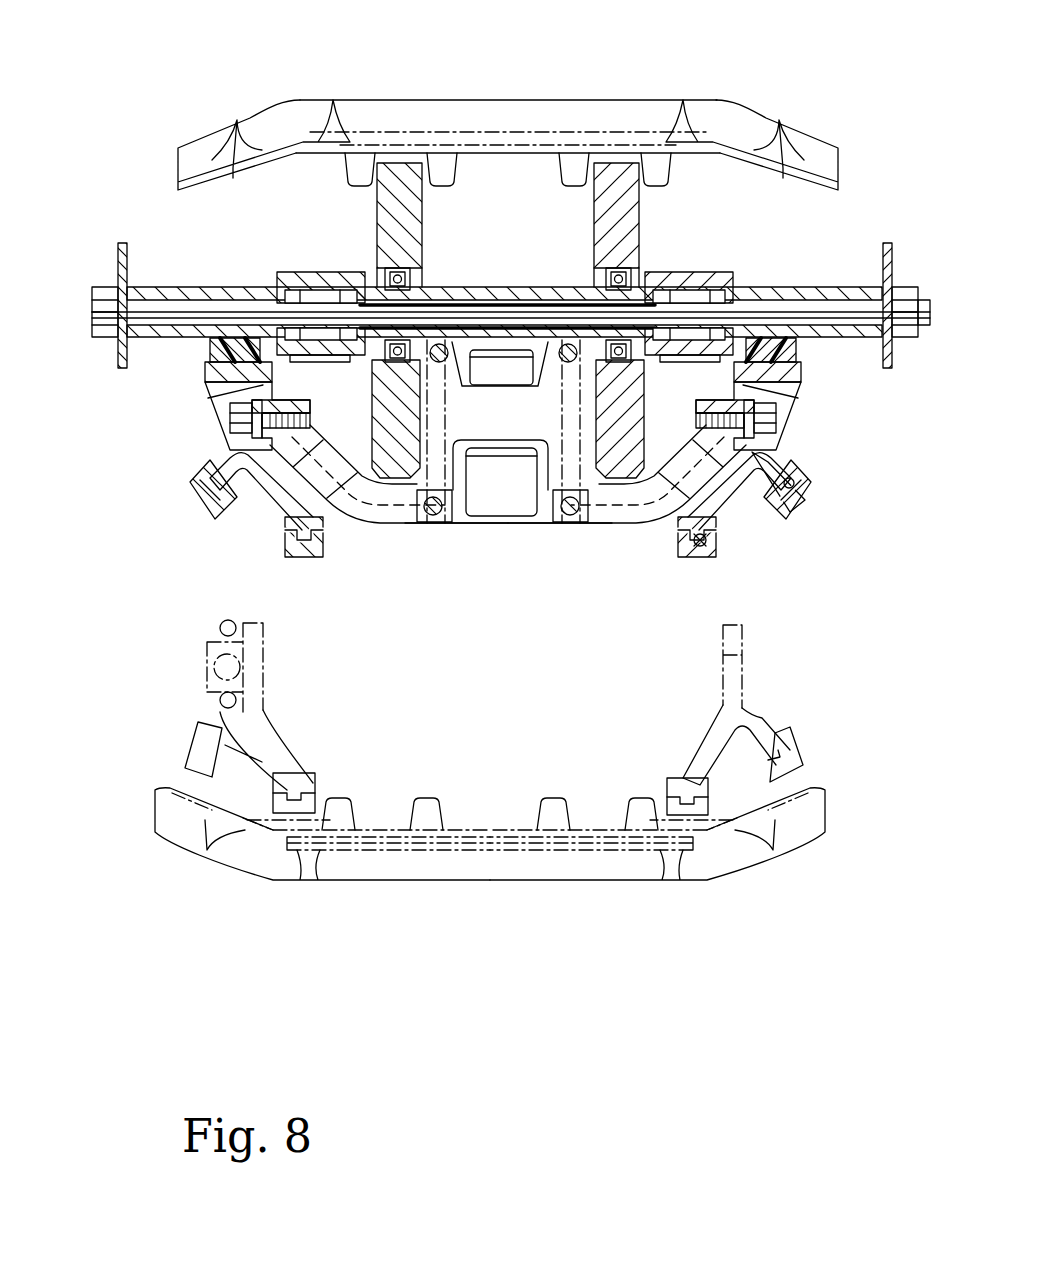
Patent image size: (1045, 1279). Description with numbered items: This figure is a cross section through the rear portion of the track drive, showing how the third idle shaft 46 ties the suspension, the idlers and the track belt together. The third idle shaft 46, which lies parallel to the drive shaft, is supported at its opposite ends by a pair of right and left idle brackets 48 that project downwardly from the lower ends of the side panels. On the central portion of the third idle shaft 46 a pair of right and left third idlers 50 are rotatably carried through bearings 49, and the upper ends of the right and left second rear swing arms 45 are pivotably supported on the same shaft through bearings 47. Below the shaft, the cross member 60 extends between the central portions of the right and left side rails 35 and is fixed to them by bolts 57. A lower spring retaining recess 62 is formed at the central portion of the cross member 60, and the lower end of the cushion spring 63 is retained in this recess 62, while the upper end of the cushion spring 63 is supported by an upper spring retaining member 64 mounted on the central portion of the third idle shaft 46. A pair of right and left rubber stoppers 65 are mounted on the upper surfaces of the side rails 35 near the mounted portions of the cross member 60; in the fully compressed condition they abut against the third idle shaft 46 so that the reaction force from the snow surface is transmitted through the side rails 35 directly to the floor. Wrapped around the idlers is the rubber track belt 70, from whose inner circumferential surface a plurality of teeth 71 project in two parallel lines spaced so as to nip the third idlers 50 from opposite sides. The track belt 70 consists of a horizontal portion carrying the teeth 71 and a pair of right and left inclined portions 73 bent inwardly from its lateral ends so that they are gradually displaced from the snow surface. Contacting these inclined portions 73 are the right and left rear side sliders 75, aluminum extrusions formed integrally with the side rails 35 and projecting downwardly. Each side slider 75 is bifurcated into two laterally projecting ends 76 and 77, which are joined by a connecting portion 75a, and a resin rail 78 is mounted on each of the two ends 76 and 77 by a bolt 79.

The side rail 35 is at (232, 385).
The second rear swing arm 45 is at (285, 278).
The third idle shaft 46 is at (150, 350).
The bearing 47 is at (290, 298).
The idle bracket 48 is at (118, 262).
The bearing 49 is at (420, 280).
The third idler 50 is at (378, 232).
The bolt 57 is at (225, 432).
The cross member 60 is at (376, 525).
The lower spring retaining recess 62 is at (435, 512).
The cushion spring 63 is at (445, 427).
The upper spring retaining member 64 is at (512, 378).
The rubber stopper 65 is at (218, 352).
The track belt 70 is at (490, 105).
The tooth 71 is at (437, 176).
The inclined portion 73 is at (735, 112).
The rear side slider 75 is at (270, 505).
The connecting portion 75a is at (745, 500).
The laterally projecting end 76 is at (672, 545).
The laterally projecting end 77 is at (800, 503).
The resin rail 78 is at (697, 555).
The bolt 79 is at (668, 527).